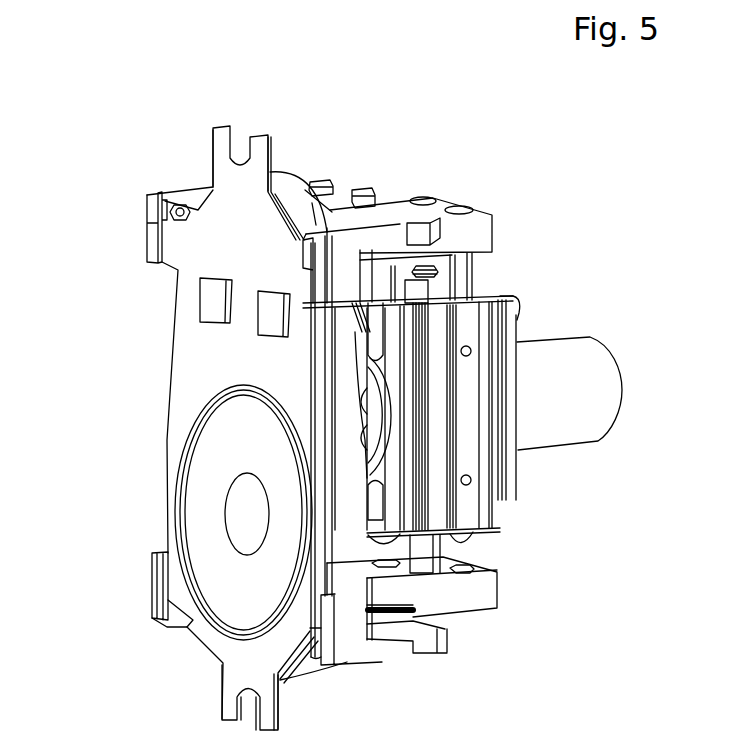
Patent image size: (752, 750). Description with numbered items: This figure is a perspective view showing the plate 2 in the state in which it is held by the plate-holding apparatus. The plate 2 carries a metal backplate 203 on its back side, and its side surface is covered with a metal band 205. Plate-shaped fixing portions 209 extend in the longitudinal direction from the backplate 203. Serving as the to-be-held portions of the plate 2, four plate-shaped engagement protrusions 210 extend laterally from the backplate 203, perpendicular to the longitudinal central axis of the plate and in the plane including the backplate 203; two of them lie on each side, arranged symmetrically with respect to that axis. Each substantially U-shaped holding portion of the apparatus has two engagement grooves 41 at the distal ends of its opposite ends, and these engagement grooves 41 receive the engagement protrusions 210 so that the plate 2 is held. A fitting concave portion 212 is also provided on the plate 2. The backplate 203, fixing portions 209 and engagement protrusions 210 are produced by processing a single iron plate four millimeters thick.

The plate 2 is at (305, 163).
The engagement groove 41 is at (177, 190).
The backplate 203 is at (185, 403).
The metal band 205 is at (312, 203).
The fixing portion 209 is at (212, 143).
The engagement protrusion 210 is at (165, 264).
The fitting concave portion 212 is at (262, 330).